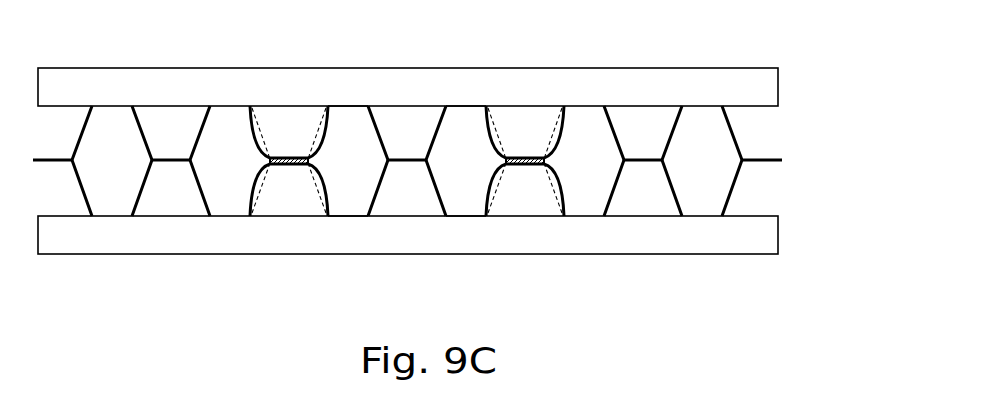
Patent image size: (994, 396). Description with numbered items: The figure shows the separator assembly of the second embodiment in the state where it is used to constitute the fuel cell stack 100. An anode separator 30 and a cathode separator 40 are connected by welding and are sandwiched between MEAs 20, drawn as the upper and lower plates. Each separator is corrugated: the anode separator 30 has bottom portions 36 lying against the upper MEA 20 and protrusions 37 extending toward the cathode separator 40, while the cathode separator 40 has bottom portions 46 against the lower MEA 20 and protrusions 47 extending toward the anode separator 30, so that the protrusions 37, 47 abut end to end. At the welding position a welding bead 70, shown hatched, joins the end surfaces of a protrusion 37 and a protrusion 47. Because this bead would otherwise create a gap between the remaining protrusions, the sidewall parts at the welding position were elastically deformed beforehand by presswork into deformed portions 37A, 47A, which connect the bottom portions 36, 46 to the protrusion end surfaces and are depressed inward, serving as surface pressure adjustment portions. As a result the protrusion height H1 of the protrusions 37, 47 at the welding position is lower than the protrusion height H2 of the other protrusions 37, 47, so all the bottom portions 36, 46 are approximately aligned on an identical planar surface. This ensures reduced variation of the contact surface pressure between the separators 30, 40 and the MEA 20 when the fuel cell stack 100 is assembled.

The fuel cell stack 100 is at (760, 47).
The MEA 20 is at (758, 90).
The anode separator 30 is at (422, 90).
The bottom portion 36 is at (355, 106).
The protrusion 37 is at (416, 160).
The deformed portion 37A is at (310, 133).
The cathode separator 40 is at (441, 232).
The bottom portion 46 is at (352, 216).
The protrusion 47 is at (407, 163).
The deformed portion 47A is at (313, 183).
The welding bead 70 is at (268, 163).
The protrusion height H1 is at (293, 165).
The protrusion height H2 is at (177, 161).